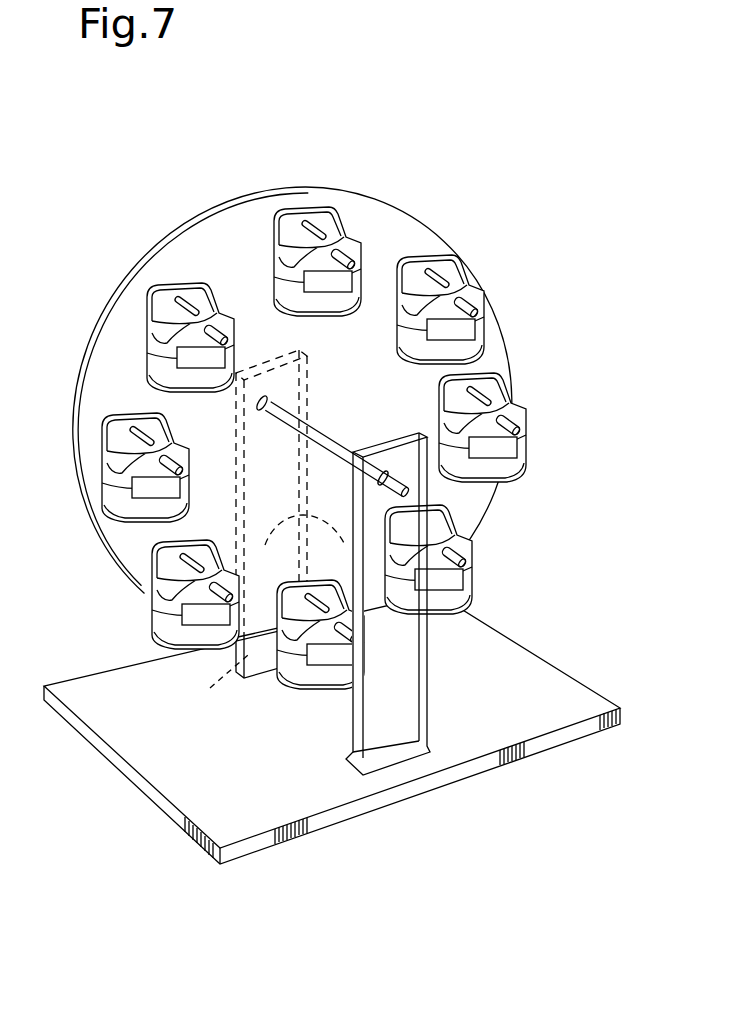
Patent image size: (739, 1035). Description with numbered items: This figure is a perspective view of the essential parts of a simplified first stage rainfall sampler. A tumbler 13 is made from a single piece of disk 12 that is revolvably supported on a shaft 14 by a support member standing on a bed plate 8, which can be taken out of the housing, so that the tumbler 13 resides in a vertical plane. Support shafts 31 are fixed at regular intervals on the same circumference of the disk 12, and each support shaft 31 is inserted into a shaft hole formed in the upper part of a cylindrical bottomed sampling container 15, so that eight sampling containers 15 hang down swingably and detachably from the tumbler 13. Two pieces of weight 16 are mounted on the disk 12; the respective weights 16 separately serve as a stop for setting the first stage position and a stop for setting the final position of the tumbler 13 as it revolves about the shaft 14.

The bed plate 8 is at (553, 687).
The disk 12 is at (292, 370).
The tumbler 13 is at (383, 230).
The shaft 14 is at (338, 432).
The sampling container 15 is at (262, 262).
The weight 16 is at (228, 657).
The support shaft 31 is at (310, 220).